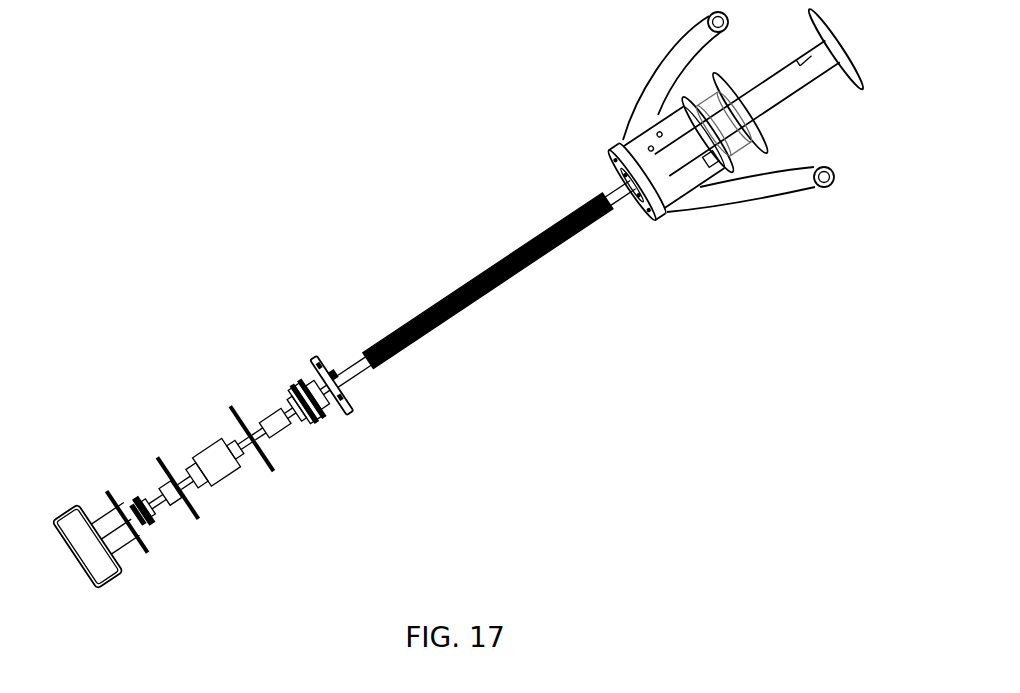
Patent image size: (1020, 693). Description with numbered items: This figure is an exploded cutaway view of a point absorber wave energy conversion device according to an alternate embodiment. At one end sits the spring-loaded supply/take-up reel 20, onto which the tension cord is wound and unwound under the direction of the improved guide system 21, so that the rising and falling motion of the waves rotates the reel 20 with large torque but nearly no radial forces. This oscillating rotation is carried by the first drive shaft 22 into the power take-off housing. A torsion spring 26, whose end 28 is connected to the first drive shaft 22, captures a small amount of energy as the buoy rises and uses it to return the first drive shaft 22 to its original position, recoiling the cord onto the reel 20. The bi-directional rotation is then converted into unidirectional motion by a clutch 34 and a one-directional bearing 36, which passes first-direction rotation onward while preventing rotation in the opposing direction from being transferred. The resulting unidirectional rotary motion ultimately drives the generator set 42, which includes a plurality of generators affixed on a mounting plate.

The spool/reel 20 is at (850, 44).
The guide system 21 is at (736, 206).
The first drive shaft 22 is at (617, 200).
The torsion spring 26 is at (512, 286).
The end of torsion spring 28 is at (343, 411).
The clutch 34 is at (297, 383).
The one-directional bearing 36 is at (298, 416).
The generator set 42 is at (122, 547).